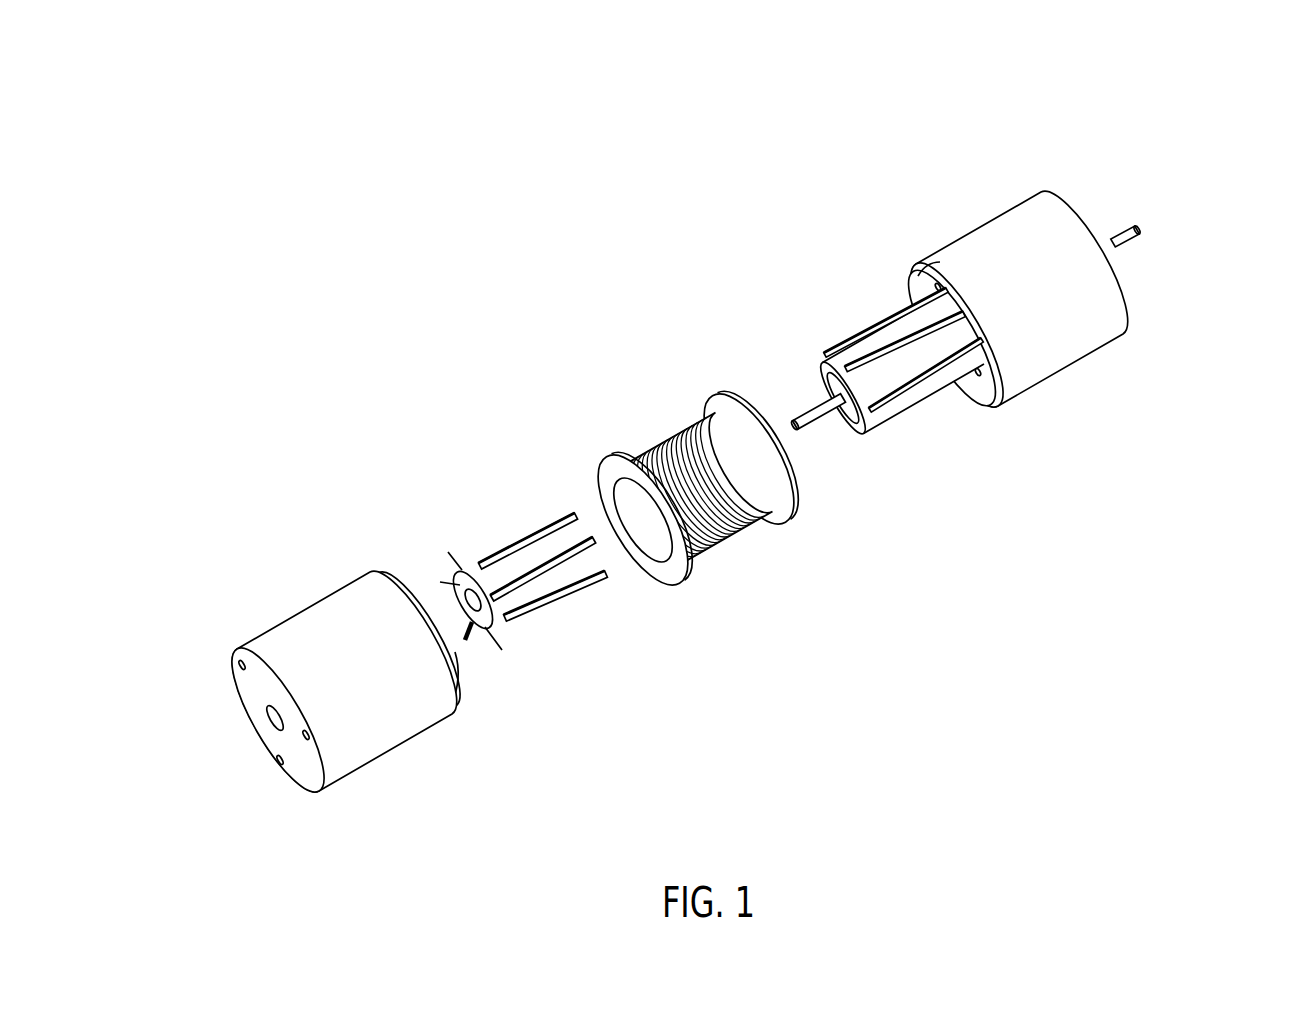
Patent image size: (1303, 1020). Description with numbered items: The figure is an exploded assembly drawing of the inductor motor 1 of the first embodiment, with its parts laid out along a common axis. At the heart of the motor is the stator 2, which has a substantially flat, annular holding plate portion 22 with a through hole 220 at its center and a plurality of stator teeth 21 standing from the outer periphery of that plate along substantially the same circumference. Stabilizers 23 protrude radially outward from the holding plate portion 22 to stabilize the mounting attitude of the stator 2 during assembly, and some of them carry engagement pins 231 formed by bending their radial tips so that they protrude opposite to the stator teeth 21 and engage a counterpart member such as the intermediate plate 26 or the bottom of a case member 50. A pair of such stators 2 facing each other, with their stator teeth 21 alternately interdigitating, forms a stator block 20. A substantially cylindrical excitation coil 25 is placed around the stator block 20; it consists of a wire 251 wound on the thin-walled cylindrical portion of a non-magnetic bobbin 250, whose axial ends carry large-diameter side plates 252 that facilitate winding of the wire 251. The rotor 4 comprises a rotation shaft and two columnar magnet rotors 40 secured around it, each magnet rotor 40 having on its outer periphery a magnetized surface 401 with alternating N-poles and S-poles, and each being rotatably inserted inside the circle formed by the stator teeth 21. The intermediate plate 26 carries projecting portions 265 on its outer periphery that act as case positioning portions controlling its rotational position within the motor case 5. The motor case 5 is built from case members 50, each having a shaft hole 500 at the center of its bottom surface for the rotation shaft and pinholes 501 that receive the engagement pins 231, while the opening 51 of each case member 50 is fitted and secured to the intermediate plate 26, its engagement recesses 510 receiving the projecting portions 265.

The inductor motor 1 is at (971, 140).
The stator 2 is at (522, 531).
The rotor 4 is at (937, 400).
The motor case 5 is at (1121, 342).
The stator block 20 is at (541, 512).
The stator teeth 21 is at (581, 593).
The holding plate portion 22 is at (481, 636).
The stabilizer 23 is at (457, 554).
The excitation coil 25 is at (667, 430).
The intermediate plate 26 is at (924, 272).
The magnet rotor 40 is at (882, 413).
The case member 50 is at (337, 730).
The opening 51 is at (350, 591).
The through hole 220 is at (459, 583).
The engagement pin 231 is at (480, 642).
The bobbin 250 is at (771, 531).
The wire 251 is at (703, 388).
The side plate 252 is at (664, 578).
The projecting portion 265 is at (1013, 352).
The magnetized surface 401 is at (870, 382).
The shaft hole 500 is at (274, 720).
The pinhole 501 is at (242, 668).
The engagement recess 510 is at (466, 645).